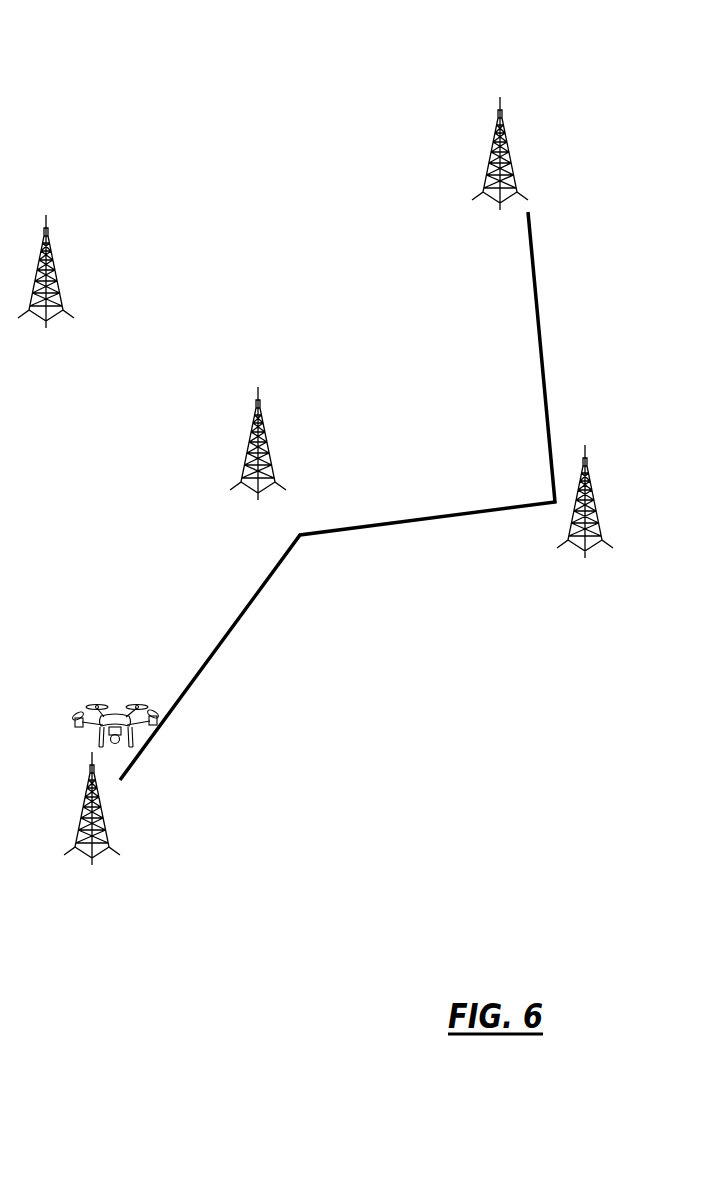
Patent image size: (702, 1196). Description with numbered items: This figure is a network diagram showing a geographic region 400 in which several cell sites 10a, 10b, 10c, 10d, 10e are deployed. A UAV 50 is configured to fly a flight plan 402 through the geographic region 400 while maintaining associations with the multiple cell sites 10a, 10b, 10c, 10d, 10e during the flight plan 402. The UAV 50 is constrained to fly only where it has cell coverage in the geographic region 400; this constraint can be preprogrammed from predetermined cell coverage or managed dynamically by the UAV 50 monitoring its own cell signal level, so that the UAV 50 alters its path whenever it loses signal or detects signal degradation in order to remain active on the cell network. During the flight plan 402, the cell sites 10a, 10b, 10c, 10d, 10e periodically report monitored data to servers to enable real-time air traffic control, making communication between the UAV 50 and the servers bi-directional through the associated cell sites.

The geographic region 400 is at (342, 50).
The cell site 10a is at (94, 210).
The cell site 10b is at (554, 106).
The cell site 10c is at (262, 350).
The cell site 10d is at (612, 464).
The cell site 10e is at (119, 794).
The flight plan 402 is at (574, 270).
The UAV 50 is at (124, 672).